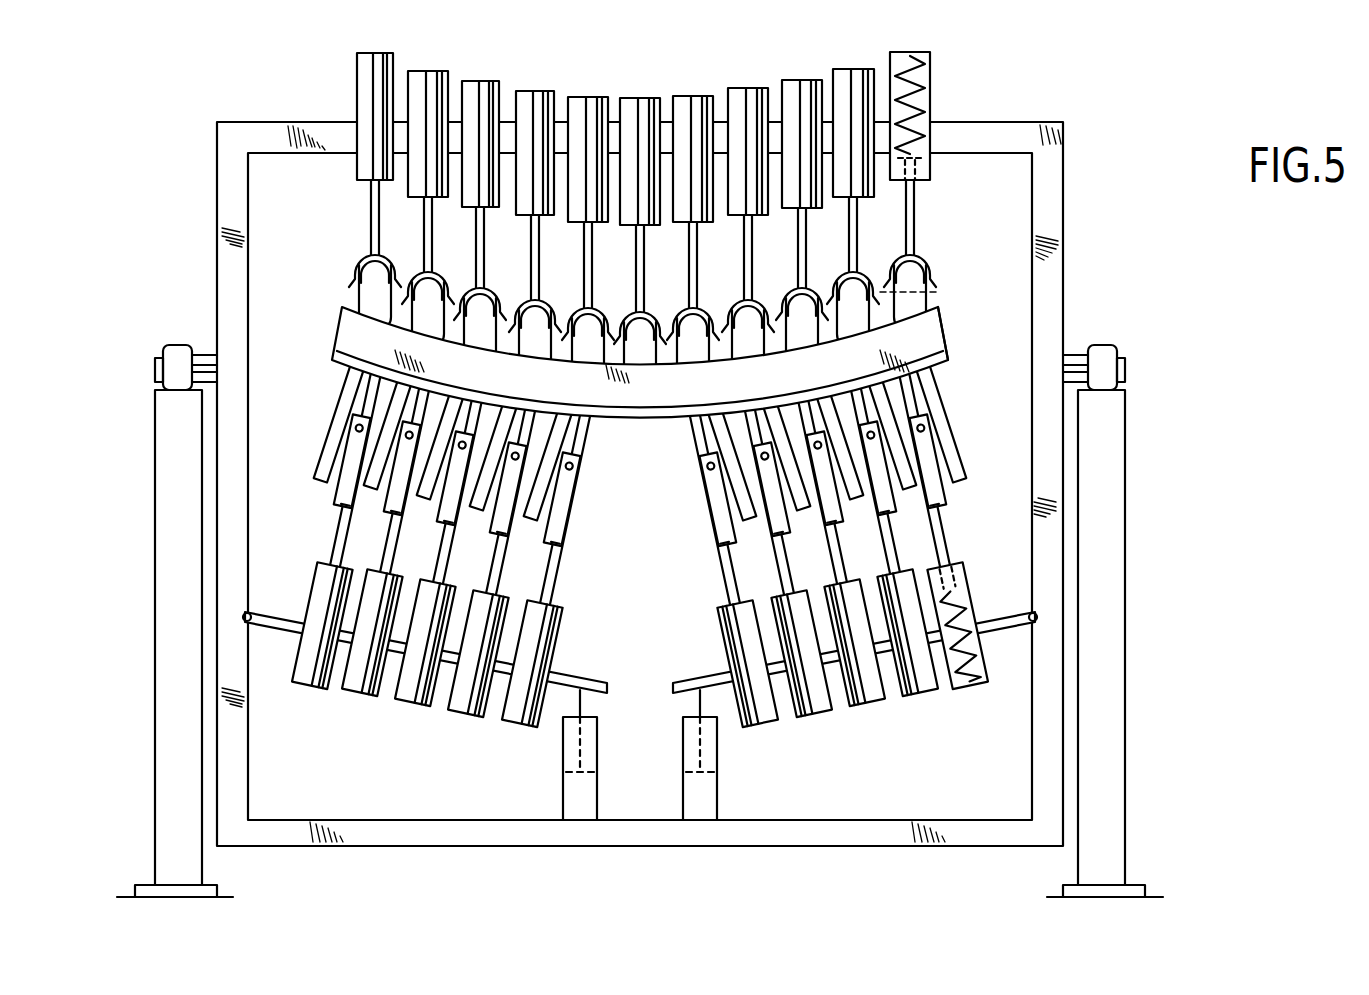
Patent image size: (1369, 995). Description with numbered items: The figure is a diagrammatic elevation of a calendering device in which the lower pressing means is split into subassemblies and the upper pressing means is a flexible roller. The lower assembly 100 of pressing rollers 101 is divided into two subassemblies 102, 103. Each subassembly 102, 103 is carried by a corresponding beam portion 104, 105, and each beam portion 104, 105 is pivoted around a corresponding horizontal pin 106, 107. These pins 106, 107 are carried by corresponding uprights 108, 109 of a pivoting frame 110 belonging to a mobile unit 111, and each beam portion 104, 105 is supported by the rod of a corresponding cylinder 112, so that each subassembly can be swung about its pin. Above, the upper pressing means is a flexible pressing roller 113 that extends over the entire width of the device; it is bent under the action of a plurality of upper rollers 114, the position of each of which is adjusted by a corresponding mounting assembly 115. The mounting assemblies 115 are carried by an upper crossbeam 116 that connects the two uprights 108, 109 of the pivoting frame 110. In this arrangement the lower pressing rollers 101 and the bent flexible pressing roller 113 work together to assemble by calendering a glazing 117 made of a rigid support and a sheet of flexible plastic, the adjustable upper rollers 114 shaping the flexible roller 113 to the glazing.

The lower assembly 100 is at (977, 452).
The pressing roller 101 is at (926, 405).
The subassembly 102 is at (425, 613).
The subassembly 103 is at (927, 719).
The beam portion 104 is at (276, 632).
The beam portion 105 is at (1000, 618).
The horizontal pin 106 is at (250, 613).
The horizontal pin 107 is at (1038, 614).
The upright 108 is at (226, 306).
The upright 109 is at (1062, 258).
The pivoting frame 110 is at (1037, 298).
The mobile unit 111 is at (975, 228).
The cylinder 112 is at (575, 802).
The flexible pressing roller 113 is at (345, 348).
The upper roller 114 is at (366, 294).
The mounting assembly 115 is at (415, 112).
The upper crossbeam 116 is at (270, 131).
The glazing 117 is at (927, 360).